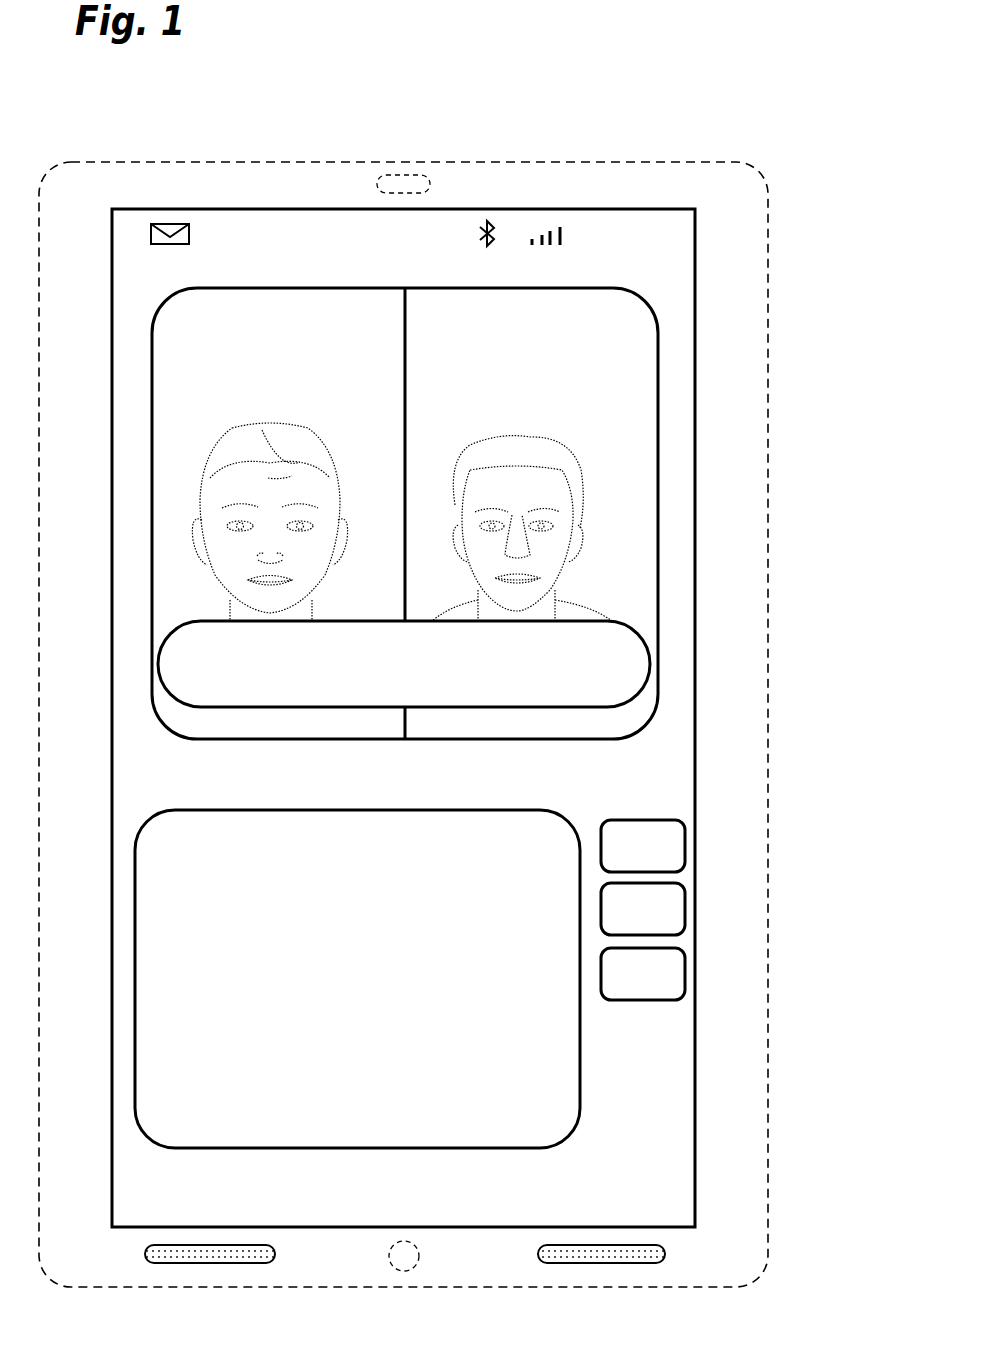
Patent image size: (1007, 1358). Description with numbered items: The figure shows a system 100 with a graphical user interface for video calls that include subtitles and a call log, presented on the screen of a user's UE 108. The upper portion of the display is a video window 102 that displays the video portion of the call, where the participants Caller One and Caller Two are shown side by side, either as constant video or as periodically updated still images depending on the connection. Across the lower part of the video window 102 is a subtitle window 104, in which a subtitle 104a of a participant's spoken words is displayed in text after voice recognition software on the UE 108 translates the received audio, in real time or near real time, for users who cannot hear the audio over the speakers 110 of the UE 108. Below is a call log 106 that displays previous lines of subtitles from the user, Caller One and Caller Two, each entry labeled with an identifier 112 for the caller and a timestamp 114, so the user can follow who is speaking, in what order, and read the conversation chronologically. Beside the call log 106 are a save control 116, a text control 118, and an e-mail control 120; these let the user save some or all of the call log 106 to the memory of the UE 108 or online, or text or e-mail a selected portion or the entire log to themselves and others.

The system 100 is at (311, 118).
The video window 102 is at (660, 481).
The subtitle window 104 is at (633, 700).
The subtitle 104a is at (572, 661).
The call log 106 is at (135, 948).
The UE 108 is at (833, 318).
The speakers 110 is at (145, 1254).
The identifier 112 is at (265, 855).
The timestamp 114 is at (168, 850).
The save control 116 is at (685, 846).
The text control 118 is at (685, 915).
The e-mail control 120 is at (685, 990).